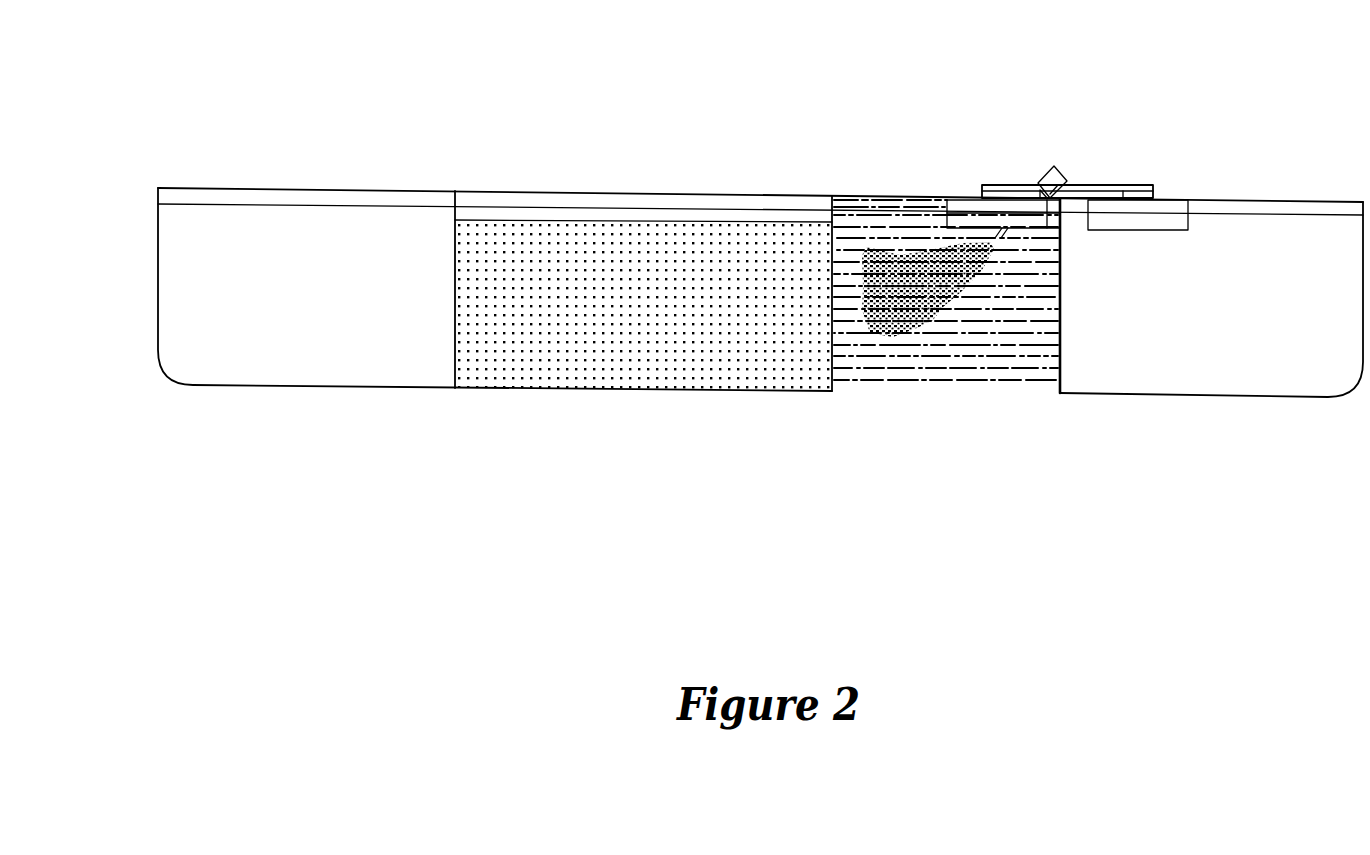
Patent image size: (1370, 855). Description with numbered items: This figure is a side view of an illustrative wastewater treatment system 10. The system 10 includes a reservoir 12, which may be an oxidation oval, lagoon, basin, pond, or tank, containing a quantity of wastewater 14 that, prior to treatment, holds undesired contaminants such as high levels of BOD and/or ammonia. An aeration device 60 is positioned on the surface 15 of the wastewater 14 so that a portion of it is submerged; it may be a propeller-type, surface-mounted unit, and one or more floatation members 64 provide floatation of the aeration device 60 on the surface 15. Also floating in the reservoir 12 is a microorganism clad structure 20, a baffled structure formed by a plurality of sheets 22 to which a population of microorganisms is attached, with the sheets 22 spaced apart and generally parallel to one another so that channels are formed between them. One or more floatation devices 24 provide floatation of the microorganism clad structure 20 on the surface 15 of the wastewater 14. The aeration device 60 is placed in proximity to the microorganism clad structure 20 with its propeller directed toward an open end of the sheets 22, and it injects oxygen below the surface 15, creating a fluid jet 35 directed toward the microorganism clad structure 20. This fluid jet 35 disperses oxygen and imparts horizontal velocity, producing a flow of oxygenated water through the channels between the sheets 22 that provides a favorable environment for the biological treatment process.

The wastewater treatment system 10 is at (870, 86).
The reservoir 12 is at (157, 247).
The wastewater 14 is at (178, 310).
The surface 15 is at (1275, 215).
The microorganism clad structure 20 is at (626, 168).
The sheets 22 is at (452, 353).
The floatation devices 24 is at (483, 195).
The fluid jet 35 is at (933, 338).
The aeration device 60 is at (1113, 170).
The floatation members 64 is at (1173, 200).